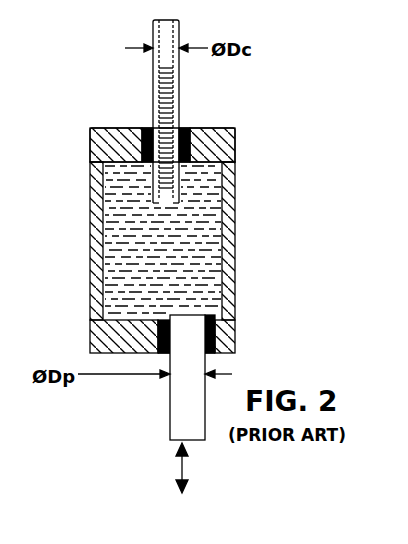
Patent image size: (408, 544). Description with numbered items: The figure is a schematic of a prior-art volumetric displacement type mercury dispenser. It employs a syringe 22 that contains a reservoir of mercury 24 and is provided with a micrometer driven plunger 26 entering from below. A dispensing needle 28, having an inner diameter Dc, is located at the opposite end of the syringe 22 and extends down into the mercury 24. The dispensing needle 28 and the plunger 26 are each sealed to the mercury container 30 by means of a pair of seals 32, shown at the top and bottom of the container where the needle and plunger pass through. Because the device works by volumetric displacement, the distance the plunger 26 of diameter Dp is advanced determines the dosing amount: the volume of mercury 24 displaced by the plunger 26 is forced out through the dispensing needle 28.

The syringe 22 is at (90, 262).
The mercury 24 is at (203, 288).
The plunger 26 is at (175, 418).
The dispensing needle 28 is at (155, 80).
The mercury container 30 is at (227, 153).
The seals 32 is at (181, 128).